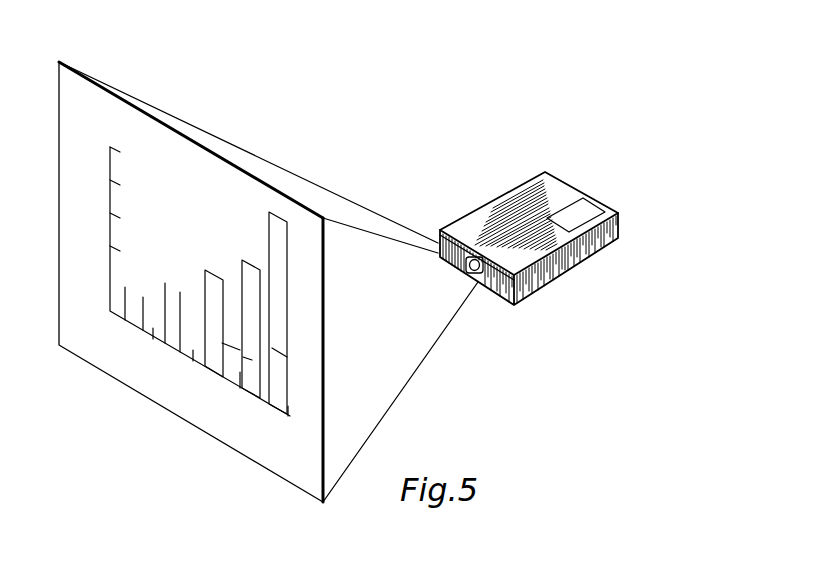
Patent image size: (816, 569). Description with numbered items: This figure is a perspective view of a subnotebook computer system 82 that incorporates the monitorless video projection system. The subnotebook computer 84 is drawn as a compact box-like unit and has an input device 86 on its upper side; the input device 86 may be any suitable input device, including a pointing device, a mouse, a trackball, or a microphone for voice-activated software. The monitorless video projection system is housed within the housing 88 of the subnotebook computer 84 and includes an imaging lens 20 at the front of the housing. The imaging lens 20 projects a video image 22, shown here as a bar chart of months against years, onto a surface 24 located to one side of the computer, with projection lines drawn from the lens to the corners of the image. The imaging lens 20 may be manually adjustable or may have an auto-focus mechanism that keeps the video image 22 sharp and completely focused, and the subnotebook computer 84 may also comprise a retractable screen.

The imaging lens 20 is at (478, 283).
The video image 22 is at (277, 450).
The surface 24 is at (60, 60).
The subnotebook computer system 82 is at (534, 207).
The subnotebook computer 84 is at (543, 273).
The input device 86 is at (582, 207).
The housing 88 is at (453, 233).